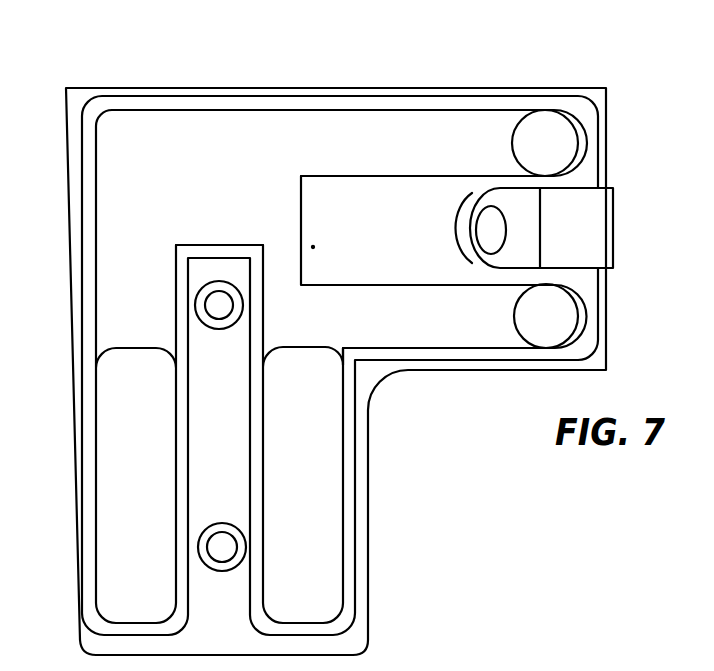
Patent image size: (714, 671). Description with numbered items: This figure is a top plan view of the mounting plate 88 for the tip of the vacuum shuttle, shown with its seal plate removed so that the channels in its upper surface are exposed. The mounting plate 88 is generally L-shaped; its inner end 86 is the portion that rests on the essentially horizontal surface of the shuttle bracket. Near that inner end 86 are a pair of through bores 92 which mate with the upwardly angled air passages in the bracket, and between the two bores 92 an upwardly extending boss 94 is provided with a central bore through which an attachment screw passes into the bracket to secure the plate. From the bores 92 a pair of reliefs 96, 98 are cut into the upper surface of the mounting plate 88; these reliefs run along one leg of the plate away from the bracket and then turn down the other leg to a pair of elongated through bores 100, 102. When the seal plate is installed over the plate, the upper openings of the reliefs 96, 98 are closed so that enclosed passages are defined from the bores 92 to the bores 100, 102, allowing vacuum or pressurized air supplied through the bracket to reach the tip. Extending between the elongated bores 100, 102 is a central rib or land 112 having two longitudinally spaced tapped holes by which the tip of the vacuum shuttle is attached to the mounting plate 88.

The inner end 86 is at (610, 183).
The mounting plate 88 is at (533, 87).
The through bores 92 is at (565, 132).
The boss 94 is at (600, 229).
The relief 96 is at (342, 125).
The relief 98 is at (462, 332).
The elongated through bore 100 is at (115, 477).
The elongated through bore 102 is at (330, 516).
The central rib 112 is at (203, 492).